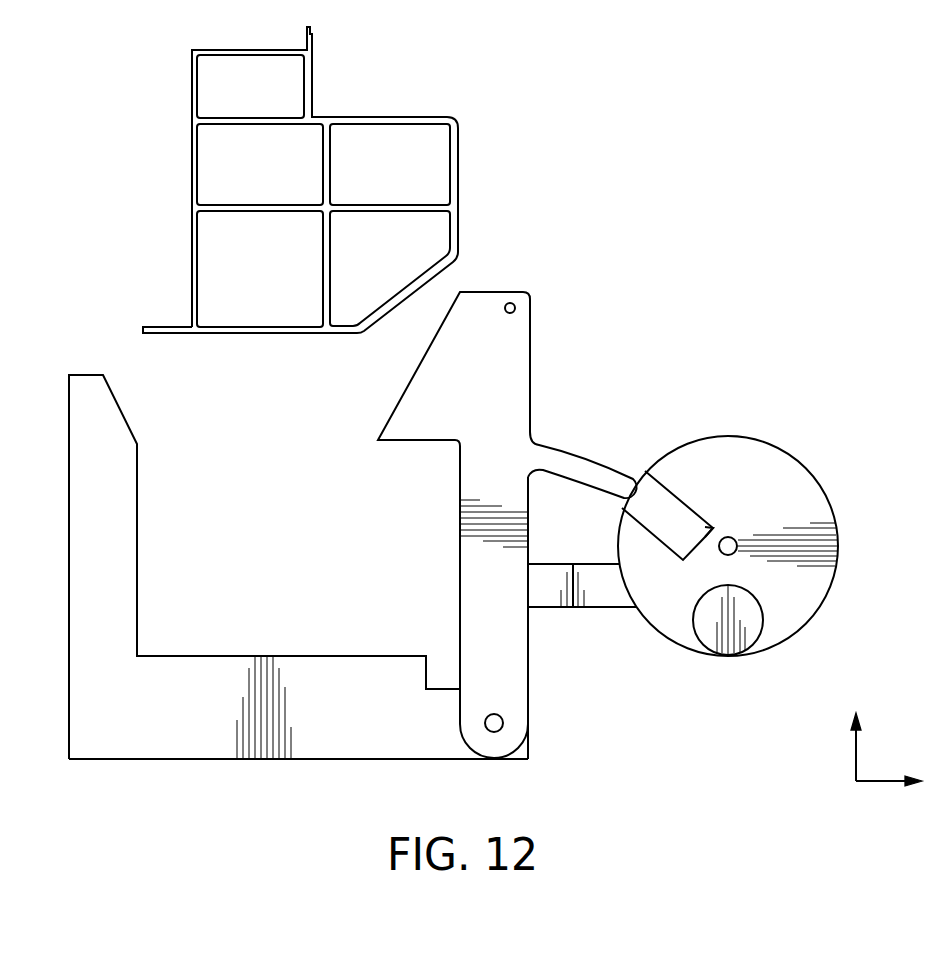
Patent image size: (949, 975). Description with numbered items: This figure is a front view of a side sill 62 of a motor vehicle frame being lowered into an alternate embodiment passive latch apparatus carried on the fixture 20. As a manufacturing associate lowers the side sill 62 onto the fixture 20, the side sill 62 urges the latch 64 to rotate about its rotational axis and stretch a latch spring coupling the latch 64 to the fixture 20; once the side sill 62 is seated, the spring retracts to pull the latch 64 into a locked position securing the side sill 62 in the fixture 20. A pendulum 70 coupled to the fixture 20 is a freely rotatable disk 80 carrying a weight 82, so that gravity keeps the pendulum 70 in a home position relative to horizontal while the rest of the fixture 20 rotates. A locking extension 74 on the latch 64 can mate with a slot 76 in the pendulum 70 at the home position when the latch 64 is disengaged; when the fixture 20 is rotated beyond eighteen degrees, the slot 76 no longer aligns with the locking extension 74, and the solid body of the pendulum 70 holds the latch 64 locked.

The fixture 20 is at (170, 747).
The side sill 62 is at (458, 157).
The latch 64 is at (522, 362).
The pendulum 70 is at (800, 487).
The locking extension 74 is at (602, 466).
The slot 76 is at (672, 513).
The freely rotatable disk 80 is at (804, 610).
The weight 82 is at (708, 630).